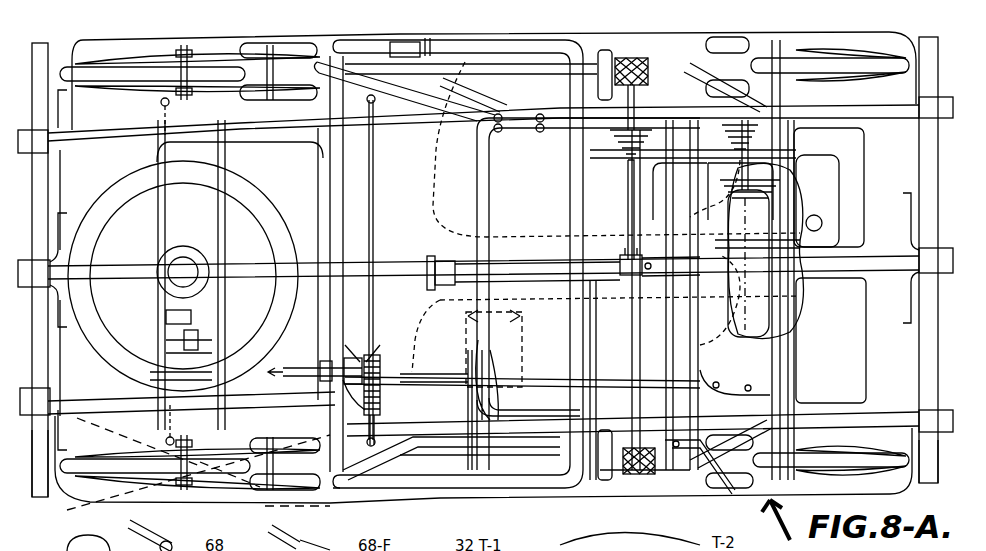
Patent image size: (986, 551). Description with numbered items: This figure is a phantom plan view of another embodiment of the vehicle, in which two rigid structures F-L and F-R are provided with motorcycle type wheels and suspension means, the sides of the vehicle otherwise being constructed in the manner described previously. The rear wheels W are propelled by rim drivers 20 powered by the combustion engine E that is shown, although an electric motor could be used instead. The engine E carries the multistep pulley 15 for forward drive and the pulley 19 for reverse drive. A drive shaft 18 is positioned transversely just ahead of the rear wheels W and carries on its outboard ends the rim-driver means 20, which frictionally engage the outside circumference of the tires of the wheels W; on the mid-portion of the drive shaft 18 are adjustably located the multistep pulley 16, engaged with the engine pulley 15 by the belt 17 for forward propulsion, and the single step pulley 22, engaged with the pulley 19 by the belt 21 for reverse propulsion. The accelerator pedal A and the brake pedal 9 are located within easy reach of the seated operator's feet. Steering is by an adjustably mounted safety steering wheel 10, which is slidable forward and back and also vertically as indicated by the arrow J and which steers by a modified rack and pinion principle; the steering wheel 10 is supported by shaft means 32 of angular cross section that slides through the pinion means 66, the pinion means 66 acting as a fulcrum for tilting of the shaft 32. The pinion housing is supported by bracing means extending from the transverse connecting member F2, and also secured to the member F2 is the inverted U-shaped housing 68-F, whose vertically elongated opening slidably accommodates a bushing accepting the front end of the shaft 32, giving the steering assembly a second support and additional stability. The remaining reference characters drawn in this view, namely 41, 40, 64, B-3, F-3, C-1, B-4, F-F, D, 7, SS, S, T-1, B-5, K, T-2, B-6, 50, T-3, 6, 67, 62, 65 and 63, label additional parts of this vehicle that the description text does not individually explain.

The wheel support post 41 is at (50, 160).
The wheel support post lower portion 40 is at (48, 497).
The frame cross rail 64 is at (893, 108).
The wheels W is at (104, 85).
The front axle B-3 is at (232, 296).
The transverse connecting member F2 is at (312, 225).
The wheel rim F-3 is at (152, 335).
The wheel hub C-1 is at (268, 262).
The frame longitudinal member B-4 is at (343, 238).
The accelerator pedal A is at (206, 330).
The brake pedal 9 is at (152, 388).
The front shock absorber F-F is at (258, 95).
The link shaft D is at (162, 104).
The spring mounting nut 7 is at (190, 100).
The rigid structure F-L is at (400, 500).
The rigid structure F-R is at (385, 36).
The side frame tube SS is at (366, 182).
The steering rod S is at (376, 104).
The transverse tube T-1 is at (495, 190).
The cross bar B-5 is at (575, 205).
The drive shaft K is at (535, 268).
The single step pulley 22 is at (616, 245).
The belt 21 is at (652, 278).
The multistep pulley 16 is at (628, 138).
The belt 17 is at (634, 172).
The drive shaft 18 is at (630, 362).
The transverse tube T-2 is at (660, 368).
The brake member B-6 is at (780, 372).
The fuel tank 50 is at (803, 275).
The pulley 19 is at (758, 282).
The engine E is at (806, 150).
The multistep pulley 15 is at (786, 175).
The tray T-3 is at (792, 350).
The rear leaf spring 6 is at (775, 490).
The gear rack 67 is at (392, 350).
The inverted U-shaped housing 68-F is at (330, 360).
The pinion means 66 is at (400, 378).
The diagonal brace tube 62 is at (436, 400).
The shaft means 32 is at (456, 372).
The adjustment arrow J is at (500, 325).
The safety steering wheel 10 is at (508, 366).
The support tube 65 is at (598, 422).
The rim-driver means 20 is at (648, 446).
The rear bracket 63 is at (672, 490).